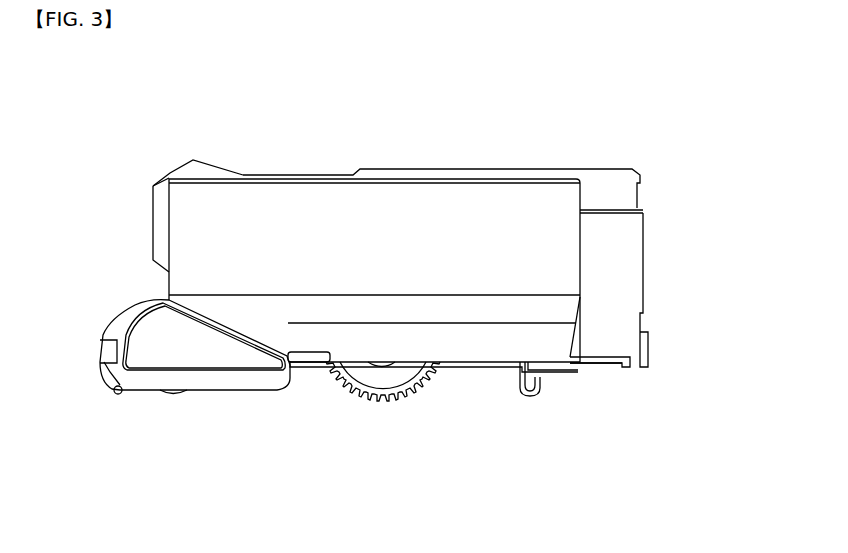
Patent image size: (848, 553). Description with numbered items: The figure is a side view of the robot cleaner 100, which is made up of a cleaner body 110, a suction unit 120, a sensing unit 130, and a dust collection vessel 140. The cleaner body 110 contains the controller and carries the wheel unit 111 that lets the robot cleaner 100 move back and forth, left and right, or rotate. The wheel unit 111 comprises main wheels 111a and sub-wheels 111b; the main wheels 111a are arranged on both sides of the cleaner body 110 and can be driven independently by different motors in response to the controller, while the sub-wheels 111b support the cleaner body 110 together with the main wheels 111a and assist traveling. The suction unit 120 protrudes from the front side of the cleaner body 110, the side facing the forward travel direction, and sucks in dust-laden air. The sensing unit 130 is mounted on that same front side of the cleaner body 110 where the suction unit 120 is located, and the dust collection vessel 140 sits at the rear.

The robot cleaner 100 is at (209, 122).
The cleaner body 110 is at (286, 186).
The wheel unit 111 is at (512, 445).
The main wheels 111a is at (420, 388).
The sub-wheels 111b is at (522, 380).
The suction unit 120 is at (215, 358).
The sensing unit 130 is at (165, 180).
The dust collection vessel 140 is at (643, 257).